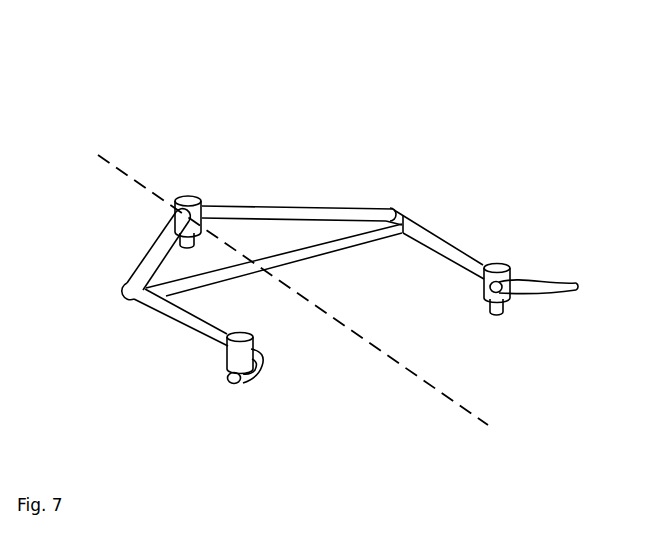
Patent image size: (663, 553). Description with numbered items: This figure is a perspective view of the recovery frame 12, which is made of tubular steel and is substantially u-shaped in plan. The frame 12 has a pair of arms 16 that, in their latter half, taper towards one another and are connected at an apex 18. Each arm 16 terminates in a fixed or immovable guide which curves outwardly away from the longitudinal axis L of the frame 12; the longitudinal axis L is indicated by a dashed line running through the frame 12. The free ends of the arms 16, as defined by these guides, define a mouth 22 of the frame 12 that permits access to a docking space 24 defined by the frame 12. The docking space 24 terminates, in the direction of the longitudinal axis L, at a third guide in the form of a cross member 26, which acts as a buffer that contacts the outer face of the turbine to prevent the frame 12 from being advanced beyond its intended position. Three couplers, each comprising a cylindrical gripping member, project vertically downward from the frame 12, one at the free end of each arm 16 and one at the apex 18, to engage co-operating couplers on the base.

The frame 12 is at (340, 97).
The arm 16 is at (446, 247).
The apex 18 is at (154, 199).
The mouth 22 is at (310, 343).
The docking space 24 is at (372, 293).
The cross member 26 is at (328, 246).
The longitudinal axis L is at (132, 180).